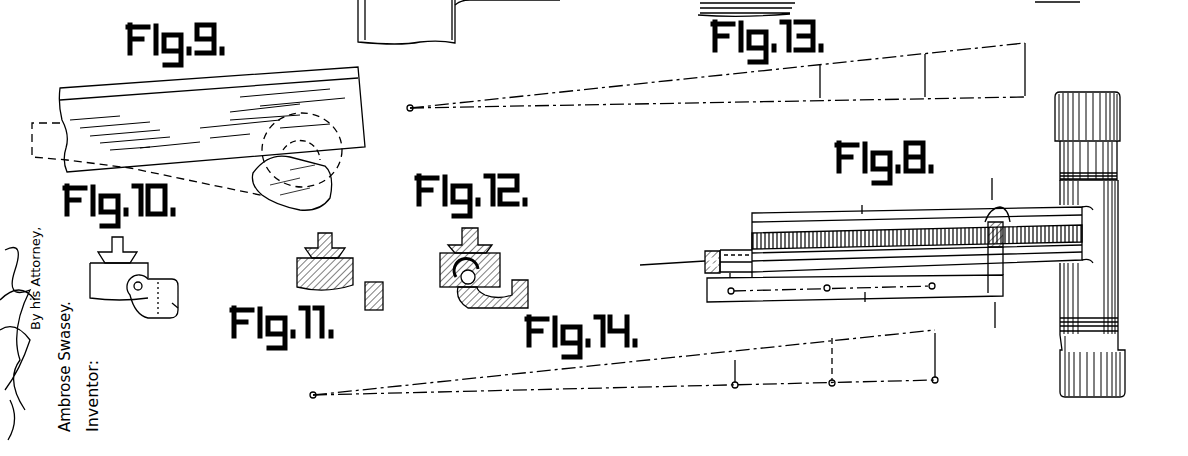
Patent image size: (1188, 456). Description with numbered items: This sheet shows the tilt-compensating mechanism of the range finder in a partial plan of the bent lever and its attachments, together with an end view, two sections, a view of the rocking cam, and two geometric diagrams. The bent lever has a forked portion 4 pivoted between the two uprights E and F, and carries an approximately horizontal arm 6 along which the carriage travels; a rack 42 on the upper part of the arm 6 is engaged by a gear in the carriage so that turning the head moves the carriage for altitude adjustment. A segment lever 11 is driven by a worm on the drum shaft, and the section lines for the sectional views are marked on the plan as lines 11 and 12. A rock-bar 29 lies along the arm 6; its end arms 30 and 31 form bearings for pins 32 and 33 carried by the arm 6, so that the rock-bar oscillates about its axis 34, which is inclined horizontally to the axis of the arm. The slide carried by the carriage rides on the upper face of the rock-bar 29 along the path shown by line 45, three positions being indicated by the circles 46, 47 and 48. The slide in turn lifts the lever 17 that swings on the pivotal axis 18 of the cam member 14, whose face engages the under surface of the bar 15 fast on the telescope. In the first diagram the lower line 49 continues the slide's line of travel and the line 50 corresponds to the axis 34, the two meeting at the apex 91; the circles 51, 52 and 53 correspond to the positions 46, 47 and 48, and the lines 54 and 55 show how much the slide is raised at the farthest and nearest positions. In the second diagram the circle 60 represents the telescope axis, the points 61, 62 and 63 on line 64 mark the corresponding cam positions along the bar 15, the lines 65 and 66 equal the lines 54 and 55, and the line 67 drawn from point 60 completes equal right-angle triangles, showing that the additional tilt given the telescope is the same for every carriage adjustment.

In FIG. 8, the forked portion 4 is at (1120, 259).
In FIG. 10, the horizontal arm 6 is at (140, 268).
In FIG. 11, the horizontal arm 6 is at (355, 263).
In FIG. 12, the horizontal arm 6 is at (500, 260).
In FIG. 8, the horizontal arm 6 is at (897, 213).
In FIG. 8, the segment lever 11 is at (864, 257).
In FIG. 8, the section line 12— 12 is at (992, 251).
In FIG. 9, the cam member 14 is at (325, 194).
In FIG. 9, the bar 15 is at (262, 102).
In FIG. 9, the lever 17 is at (218, 180).
In FIG. 9, the pivotal axis 18 is at (342, 160).
In FIG. 9, the rock-bar 29 is at (207, 119).
In FIG. 10, the rock-bar 29 is at (178, 308).
In FIG. 11, the rock-bar 29 is at (375, 310).
In FIG. 8, the rock-bar 29 is at (707, 300).
In FIG. 10, the arm 30 is at (150, 290).
In FIG. 8, the arm 30 is at (718, 268).
In FIG. 12, the arm 31 is at (490, 300).
In FIG. 8, the arm 31 is at (1003, 264).
In FIG. 12, the pin 32 is at (462, 282).
In FIG. 8, the pin 32 is at (1005, 225).
In FIG. 10, the pin 33 is at (138, 288).
In FIG. 8, the pin 33 is at (705, 256).
In FIG. 8, the axis 34 is at (663, 267).
In FIG. 10, the rack 42 is at (122, 240).
In FIG. 11, the rack 42 is at (335, 247).
In FIG. 12, the rack 42 is at (480, 243).
In FIG. 8, the rack 42 is at (815, 238).
In FIG. 8, the line 45 is at (790, 300).
In FIG. 8, the circle 46 is at (731, 294).
In FIG. 8, the circle 47 is at (827, 291).
In FIG. 8, the circle 48 is at (932, 289).
In FIG. 14, the lower line 49 is at (616, 390).
In FIG. 14, the line 50 is at (624, 362).
In FIG. 14, the point 51 is at (732, 396).
In FIG. 14, the circle 52 is at (827, 373).
In FIG. 14, the circle 53 is at (934, 391).
In FIG. 14, the line 54 is at (936, 348).
In FIG. 14, the line 55 is at (736, 364).
In FIG. 13, the circle 60 is at (407, 99).
In FIG. 13, the point 61 is at (819, 90).
In FIG. 13, the point 62 is at (925, 84).
In FIG. 13, the point 63 is at (1021, 77).
In FIG. 13, the line 64 is at (733, 104).
In FIG. 13, the line 65 is at (822, 90).
In FIG. 13, the line 66 is at (1026, 68).
In FIG. 13, the line 67 is at (652, 80).
In FIG. 14, the apex 91 is at (312, 386).
In FIG. 8, the upright E is at (1121, 112).
In FIG. 8, the upright F is at (1125, 372).